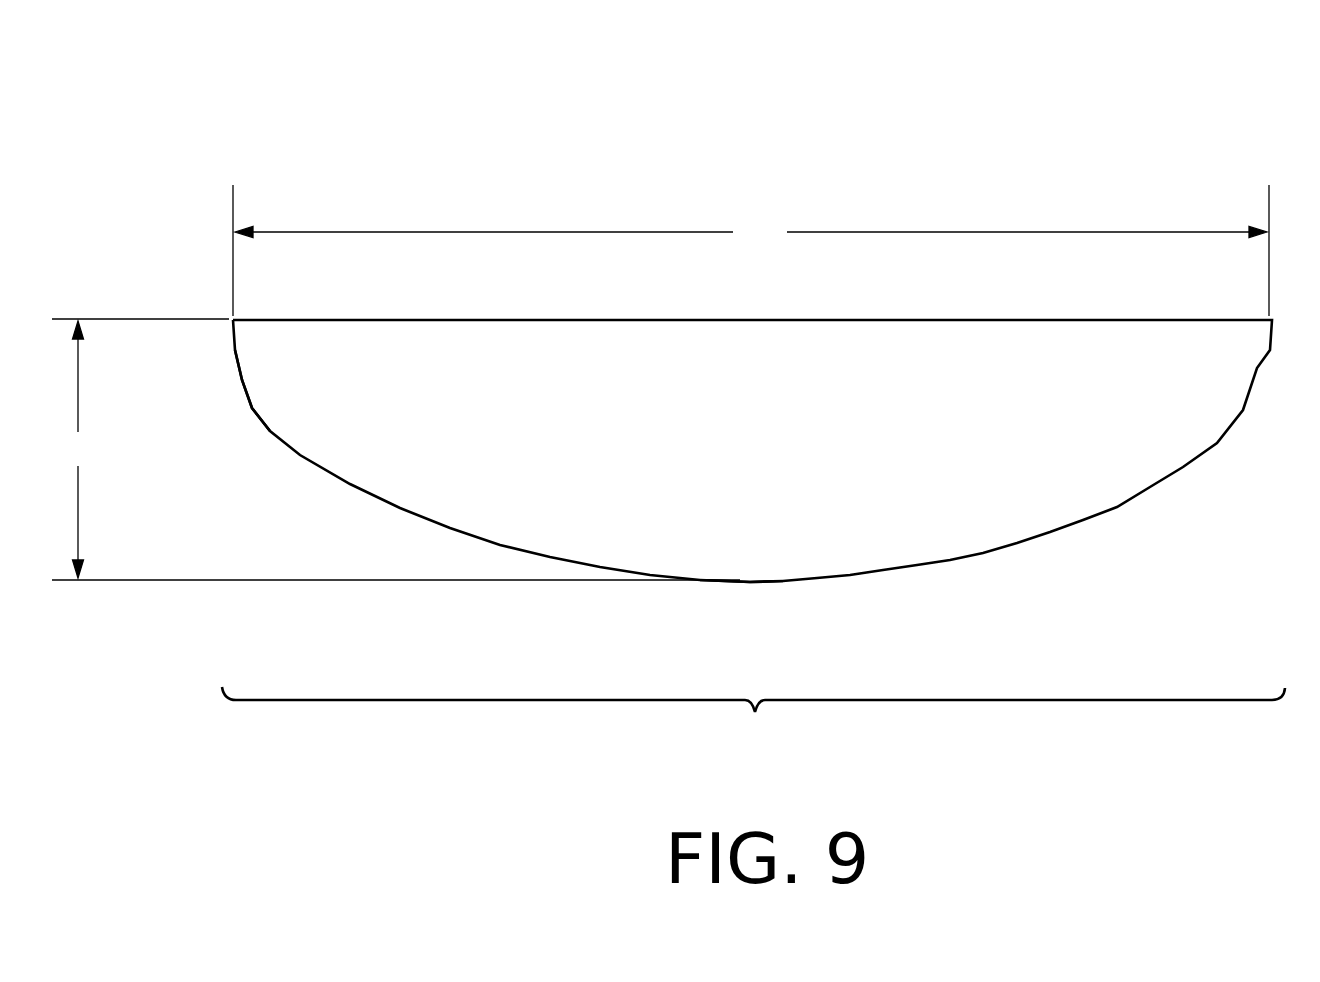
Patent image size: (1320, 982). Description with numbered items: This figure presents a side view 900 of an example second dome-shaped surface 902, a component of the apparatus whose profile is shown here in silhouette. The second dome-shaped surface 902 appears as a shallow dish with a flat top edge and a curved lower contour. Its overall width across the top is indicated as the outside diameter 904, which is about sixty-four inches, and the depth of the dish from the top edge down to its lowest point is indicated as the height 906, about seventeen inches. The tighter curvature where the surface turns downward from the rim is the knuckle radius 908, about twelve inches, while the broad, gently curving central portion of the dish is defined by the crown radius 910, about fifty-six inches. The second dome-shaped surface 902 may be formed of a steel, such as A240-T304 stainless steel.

The side view 900 is at (753, 712).
The second dome-shaped surface 902 is at (231, 67).
The outside diameter 904 is at (751, 250).
The height 906 is at (396, 449).
The knuckle radius 908 is at (242, 425).
The crown radius 910 is at (726, 600).